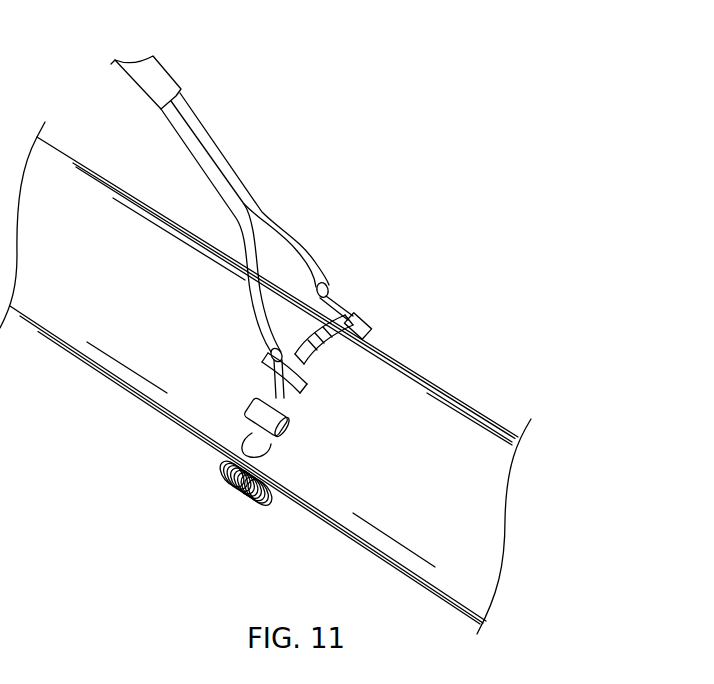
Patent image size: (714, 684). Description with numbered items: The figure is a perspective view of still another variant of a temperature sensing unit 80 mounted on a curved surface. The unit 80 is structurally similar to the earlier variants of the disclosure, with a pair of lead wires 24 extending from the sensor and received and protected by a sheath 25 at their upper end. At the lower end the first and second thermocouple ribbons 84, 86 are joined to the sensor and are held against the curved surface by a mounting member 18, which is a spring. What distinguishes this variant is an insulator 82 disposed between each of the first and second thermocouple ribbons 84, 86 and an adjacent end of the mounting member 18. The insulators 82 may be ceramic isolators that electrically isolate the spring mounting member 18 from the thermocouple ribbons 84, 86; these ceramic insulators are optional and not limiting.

The mounting member 18 is at (208, 495).
The lead wires 24 is at (221, 184).
The sheath 25 is at (148, 83).
The temperature sensing unit 80 is at (475, 227).
The insulator 82 is at (247, 402).
The first thermocouple ribbon 84 is at (275, 382).
The second thermocouple ribbon 86 is at (317, 354).